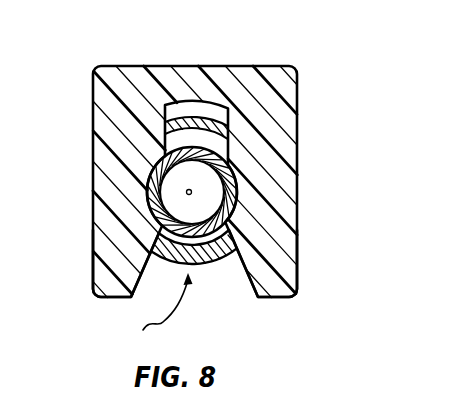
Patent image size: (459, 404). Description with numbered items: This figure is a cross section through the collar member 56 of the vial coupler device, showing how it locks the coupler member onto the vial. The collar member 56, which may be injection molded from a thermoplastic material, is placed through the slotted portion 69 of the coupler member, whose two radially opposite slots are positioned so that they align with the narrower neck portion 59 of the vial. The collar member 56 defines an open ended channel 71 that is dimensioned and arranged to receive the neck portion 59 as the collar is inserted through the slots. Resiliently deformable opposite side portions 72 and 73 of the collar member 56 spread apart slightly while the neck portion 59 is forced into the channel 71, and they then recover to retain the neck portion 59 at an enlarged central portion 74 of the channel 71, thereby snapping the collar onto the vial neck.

The collar member 56 is at (306, 38).
The neck portion 59 is at (200, 145).
The slotted portion 69 is at (197, 270).
The open ended channel 71 is at (150, 308).
The side portion 72 is at (100, 289).
The side portion 73 is at (290, 277).
The enlarged central portion 74 is at (237, 202).